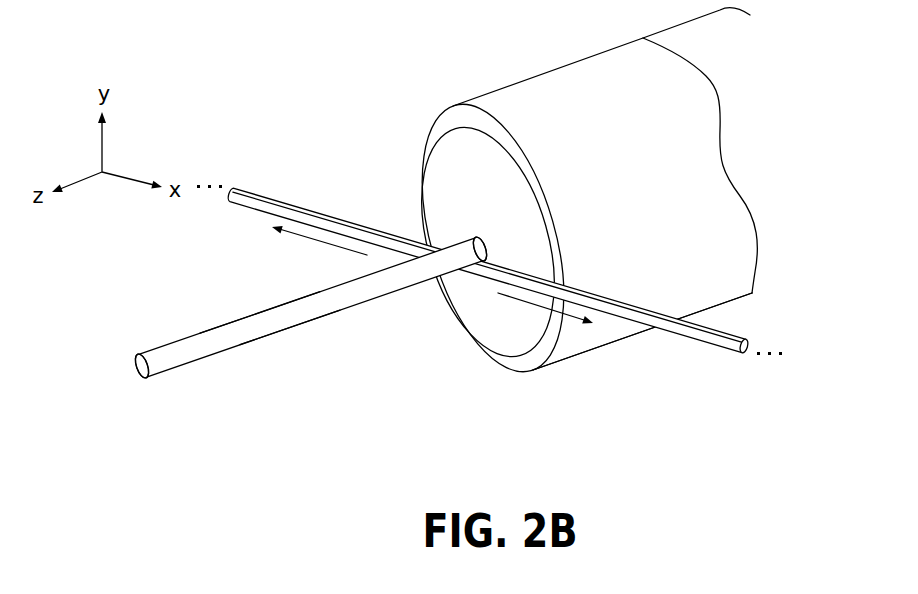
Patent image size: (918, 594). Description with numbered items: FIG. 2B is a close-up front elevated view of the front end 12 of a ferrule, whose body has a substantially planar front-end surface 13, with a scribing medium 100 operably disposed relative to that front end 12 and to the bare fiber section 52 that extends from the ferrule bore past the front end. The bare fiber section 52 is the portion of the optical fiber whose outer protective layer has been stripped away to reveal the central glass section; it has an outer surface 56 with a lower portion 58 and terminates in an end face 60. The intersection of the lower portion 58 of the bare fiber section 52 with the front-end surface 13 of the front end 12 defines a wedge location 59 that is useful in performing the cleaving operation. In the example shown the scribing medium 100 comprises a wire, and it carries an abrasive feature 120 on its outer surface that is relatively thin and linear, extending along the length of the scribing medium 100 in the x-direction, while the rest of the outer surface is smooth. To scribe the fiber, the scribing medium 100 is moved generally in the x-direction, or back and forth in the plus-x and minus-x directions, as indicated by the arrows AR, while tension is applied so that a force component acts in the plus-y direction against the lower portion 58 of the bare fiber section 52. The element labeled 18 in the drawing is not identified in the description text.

The front end 12 is at (377, 160).
The front-end surface 13 is at (453, 180).
The end face 18 is at (463, 120).
The bare fiber section 52 is at (286, 293).
The outer surface 56 is at (250, 325).
The lower portion 58 is at (283, 333).
The wedge location 59 is at (467, 293).
The end face 60 is at (137, 367).
The scribing medium 100 is at (651, 350).
The abrasive feature 120 is at (723, 330).
The arrows AR is at (320, 243).